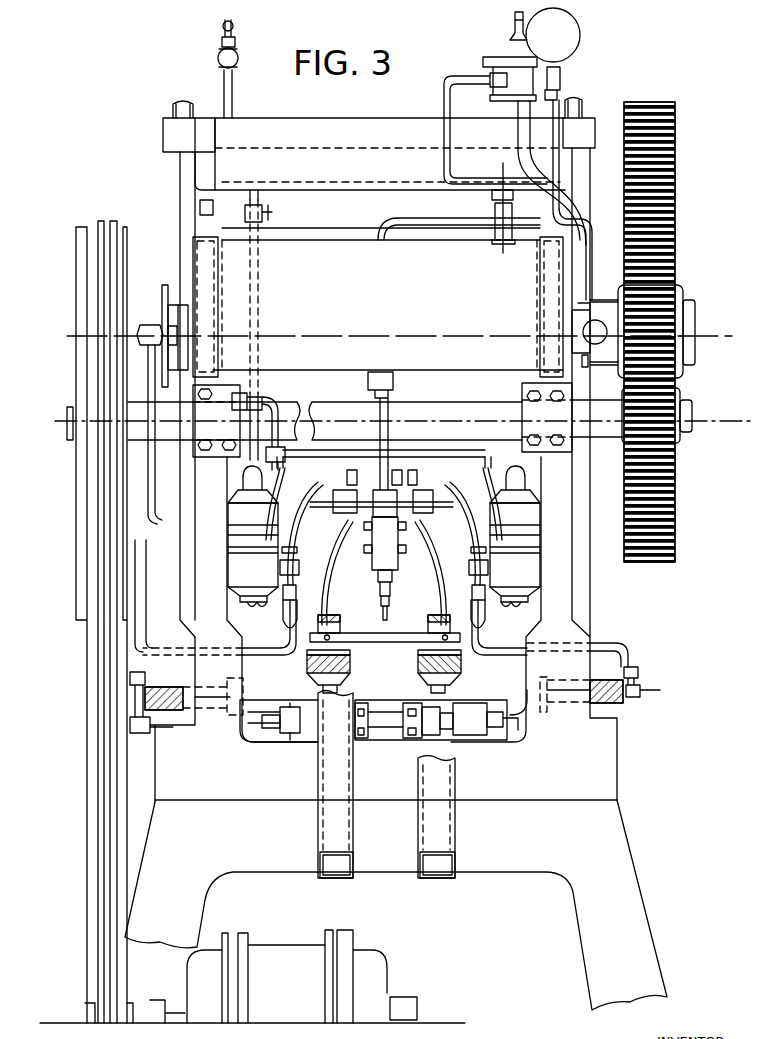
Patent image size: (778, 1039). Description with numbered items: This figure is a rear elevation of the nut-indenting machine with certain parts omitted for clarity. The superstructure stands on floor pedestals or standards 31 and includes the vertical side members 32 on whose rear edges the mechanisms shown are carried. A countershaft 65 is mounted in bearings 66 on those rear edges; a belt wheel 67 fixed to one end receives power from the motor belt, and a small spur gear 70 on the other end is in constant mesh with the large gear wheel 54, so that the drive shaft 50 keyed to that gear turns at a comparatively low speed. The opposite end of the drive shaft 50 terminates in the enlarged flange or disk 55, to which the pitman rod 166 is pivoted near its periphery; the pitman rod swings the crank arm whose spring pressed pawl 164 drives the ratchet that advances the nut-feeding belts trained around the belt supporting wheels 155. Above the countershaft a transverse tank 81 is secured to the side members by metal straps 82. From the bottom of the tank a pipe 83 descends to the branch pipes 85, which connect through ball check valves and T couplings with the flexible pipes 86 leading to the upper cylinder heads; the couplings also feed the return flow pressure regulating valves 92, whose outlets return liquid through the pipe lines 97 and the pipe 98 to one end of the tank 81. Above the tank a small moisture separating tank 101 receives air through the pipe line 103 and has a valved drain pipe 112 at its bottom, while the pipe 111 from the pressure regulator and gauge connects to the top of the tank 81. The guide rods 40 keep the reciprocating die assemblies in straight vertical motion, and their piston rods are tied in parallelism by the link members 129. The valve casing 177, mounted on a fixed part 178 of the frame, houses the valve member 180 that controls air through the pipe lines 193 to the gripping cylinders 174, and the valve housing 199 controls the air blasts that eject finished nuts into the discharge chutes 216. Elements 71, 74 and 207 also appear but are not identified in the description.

The floor pedestals or standards 31 is at (293, 926).
The vertical side members 32 is at (192, 586).
The guide rods 40 is at (568, 38).
The drive shaft 50 is at (695, 315).
The large gear wheel 54 is at (676, 222).
The flange or disk 55 is at (162, 292).
The countershaft 65 is at (597, 430).
The bearings 66 is at (198, 414).
The belt wheel 67 is at (127, 262).
The spur gear 70 is at (662, 412).
The die block 71 is at (340, 624).
The nozzle 74 is at (352, 670).
The tank 81 is at (388, 299).
The metal straps 82 is at (213, 308).
The pipe 83 is at (400, 420).
The branch pipes 85 is at (343, 540).
The flexible pipes 86 is at (300, 518).
The return flow pressure regulating valves 92 is at (236, 556).
The pipe lines 97 is at (536, 492).
The pipe 98 is at (283, 398).
The moisture separating tank 101 is at (379, 157).
The pipe line 103 is at (229, 90).
The pipe 111 is at (444, 100).
The valved drain pipe 112 is at (260, 198).
The link members 129 is at (373, 642).
The belt supporting wheels 155 is at (292, 738).
The spring pressed pawl 164 is at (388, 722).
The pitman rod 166 is at (140, 592).
The cylinders 174 is at (176, 710).
The valve casing 177 is at (410, 558).
The fixed part of the machine frame 178 is at (368, 595).
The valve member 180 is at (398, 218).
The pipe lines 193 is at (267, 648).
The valve housing 199 is at (568, 320).
The air line 207 is at (591, 230).
The discharge chutes 216 is at (352, 834).